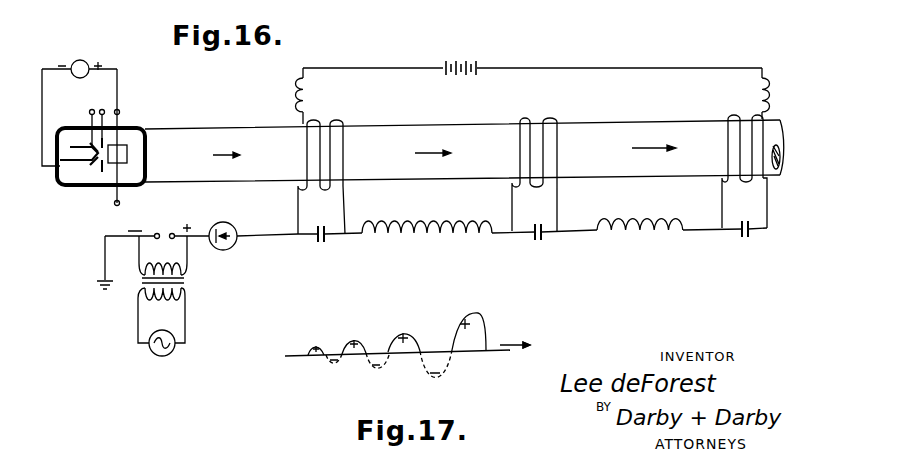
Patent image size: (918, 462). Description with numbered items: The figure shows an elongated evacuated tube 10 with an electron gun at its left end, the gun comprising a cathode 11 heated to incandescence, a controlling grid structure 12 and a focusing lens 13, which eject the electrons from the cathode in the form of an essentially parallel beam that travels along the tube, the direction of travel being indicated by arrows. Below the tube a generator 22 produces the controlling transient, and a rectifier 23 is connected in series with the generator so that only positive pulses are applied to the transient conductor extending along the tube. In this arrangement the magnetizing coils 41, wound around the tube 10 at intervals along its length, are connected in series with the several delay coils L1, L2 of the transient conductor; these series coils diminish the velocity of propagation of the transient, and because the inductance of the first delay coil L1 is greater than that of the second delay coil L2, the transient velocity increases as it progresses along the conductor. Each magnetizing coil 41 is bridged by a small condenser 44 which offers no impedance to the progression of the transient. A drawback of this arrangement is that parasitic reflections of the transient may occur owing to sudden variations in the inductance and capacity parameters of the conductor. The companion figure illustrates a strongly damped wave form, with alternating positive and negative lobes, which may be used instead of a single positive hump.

The evacuated tube 10 is at (160, 128).
The cathode 11 is at (72, 147).
The controlling grid structure 12 is at (88, 176).
The focusing lens 13 is at (102, 172).
The generator 22 is at (171, 350).
The rectifier 23 is at (230, 248).
The magnetizing coils 41 is at (320, 122).
The condenser 44 is at (318, 237).
The delay coil L1 is at (415, 240).
The delay coil L2 is at (655, 238).